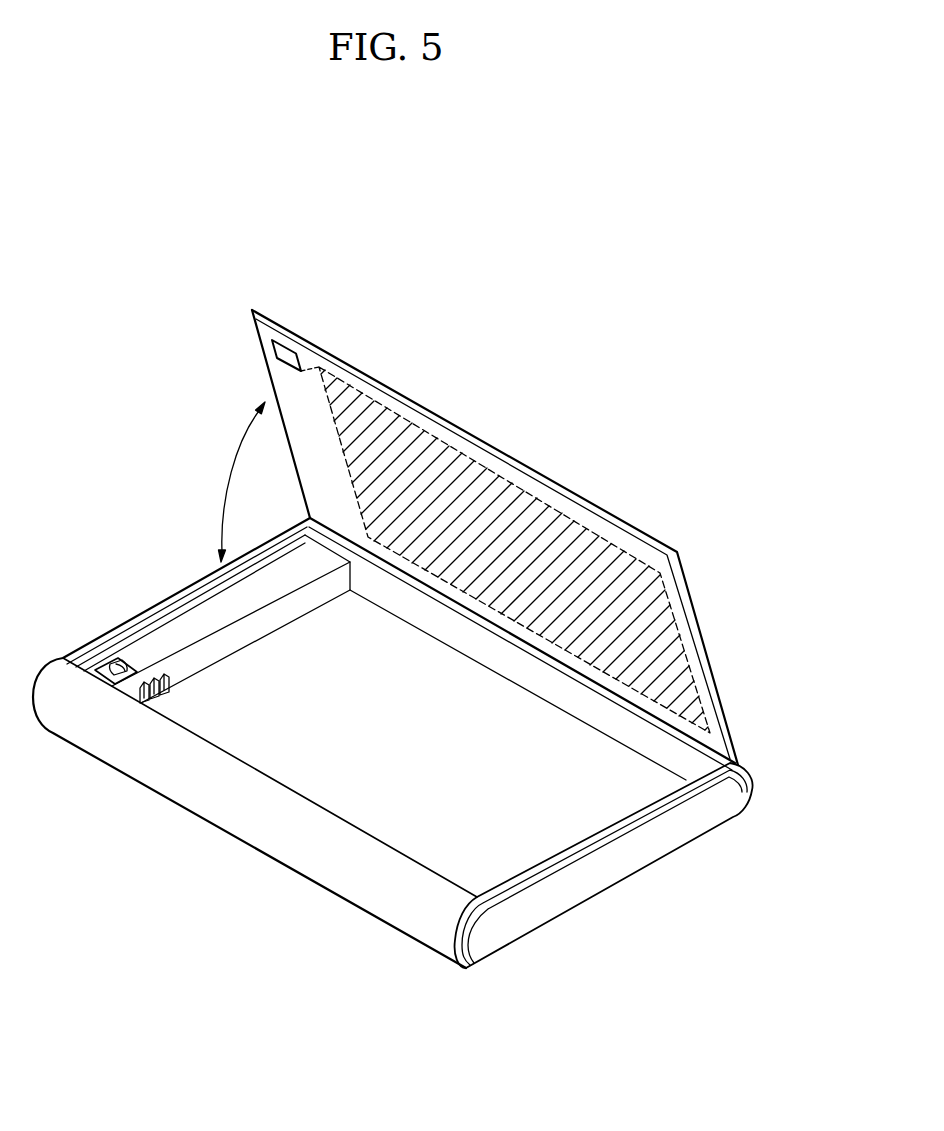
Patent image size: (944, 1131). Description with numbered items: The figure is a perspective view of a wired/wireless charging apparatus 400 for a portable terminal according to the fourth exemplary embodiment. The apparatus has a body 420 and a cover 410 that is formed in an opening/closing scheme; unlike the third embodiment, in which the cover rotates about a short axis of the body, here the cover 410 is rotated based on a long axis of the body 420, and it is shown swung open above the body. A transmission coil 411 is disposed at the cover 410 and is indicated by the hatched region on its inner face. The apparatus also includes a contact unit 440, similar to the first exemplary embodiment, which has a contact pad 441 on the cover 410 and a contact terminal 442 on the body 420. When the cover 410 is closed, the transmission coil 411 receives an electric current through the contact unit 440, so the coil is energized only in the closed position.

The wired/wireless charging apparatus 400 is at (625, 326).
The cover 410 is at (638, 529).
The transmission coil 411 is at (484, 478).
The body 420 is at (320, 853).
The contact unit 440 is at (142, 373).
The contact pad 441 is at (264, 347).
The contact terminal 442 is at (113, 662).